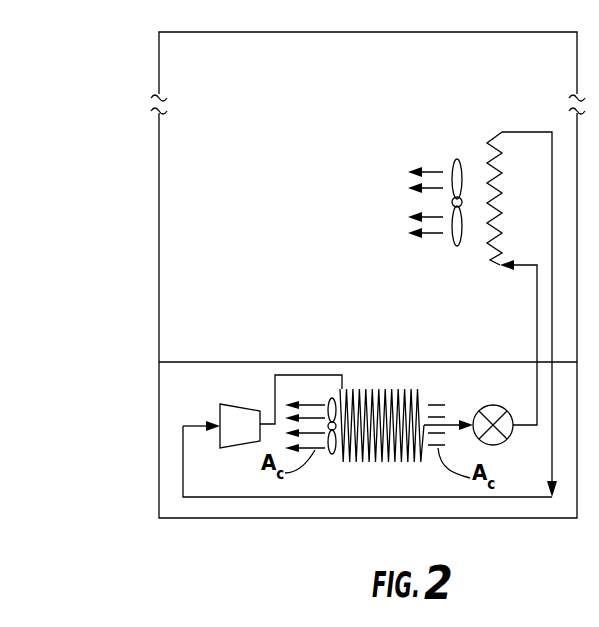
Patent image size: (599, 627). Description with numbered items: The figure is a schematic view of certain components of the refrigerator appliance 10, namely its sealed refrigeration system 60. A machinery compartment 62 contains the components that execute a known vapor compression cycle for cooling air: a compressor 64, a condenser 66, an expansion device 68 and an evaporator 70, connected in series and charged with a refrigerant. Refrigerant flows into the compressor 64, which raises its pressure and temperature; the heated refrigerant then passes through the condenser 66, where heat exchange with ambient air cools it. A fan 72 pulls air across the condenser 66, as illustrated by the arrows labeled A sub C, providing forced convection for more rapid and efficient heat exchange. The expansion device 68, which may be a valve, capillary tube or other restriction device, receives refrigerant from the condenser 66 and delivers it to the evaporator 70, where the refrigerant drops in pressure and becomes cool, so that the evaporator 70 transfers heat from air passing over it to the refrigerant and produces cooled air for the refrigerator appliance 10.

The refrigerator appliance 10 is at (100, 145).
The sealed refrigeration system 60 is at (360, 336).
The machinery compartment 62 is at (188, 393).
The compressor 64 is at (240, 404).
The condenser 66 is at (399, 389).
The expansion device 68 is at (488, 406).
The evaporator 70 is at (487, 163).
The fan 72 is at (330, 404).